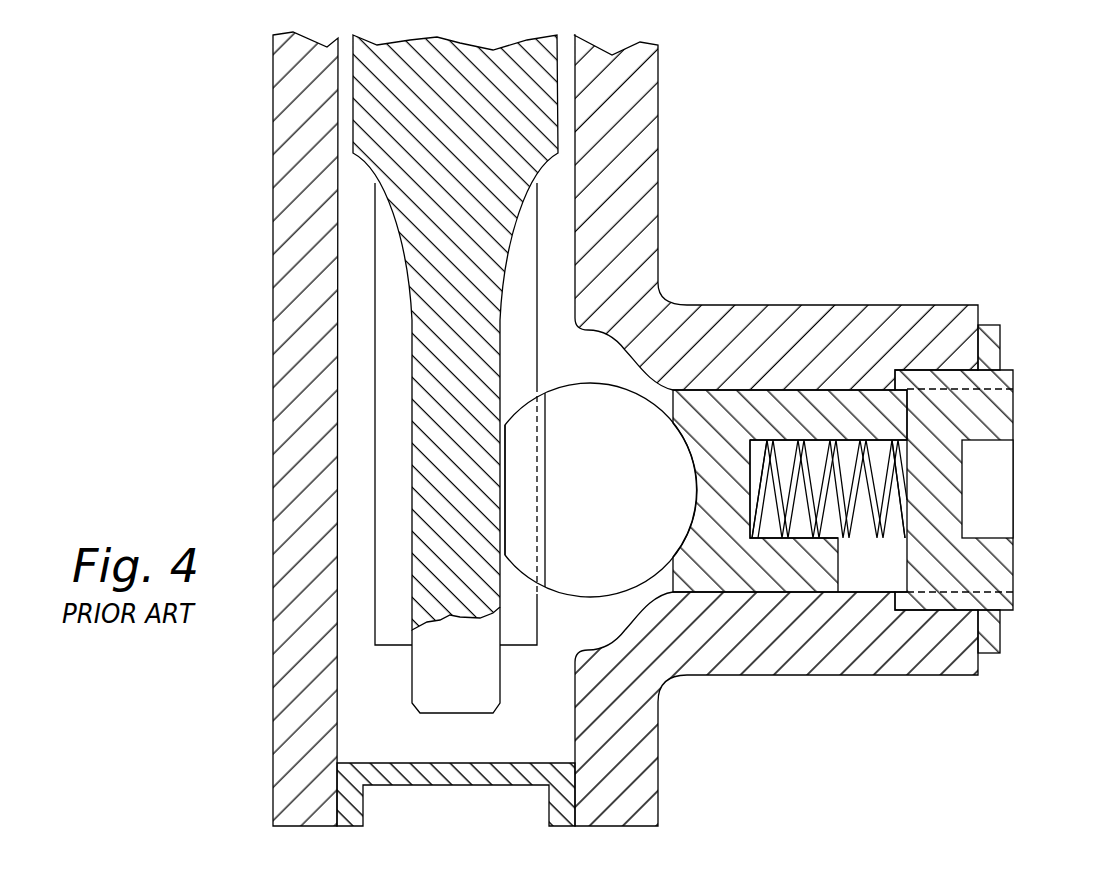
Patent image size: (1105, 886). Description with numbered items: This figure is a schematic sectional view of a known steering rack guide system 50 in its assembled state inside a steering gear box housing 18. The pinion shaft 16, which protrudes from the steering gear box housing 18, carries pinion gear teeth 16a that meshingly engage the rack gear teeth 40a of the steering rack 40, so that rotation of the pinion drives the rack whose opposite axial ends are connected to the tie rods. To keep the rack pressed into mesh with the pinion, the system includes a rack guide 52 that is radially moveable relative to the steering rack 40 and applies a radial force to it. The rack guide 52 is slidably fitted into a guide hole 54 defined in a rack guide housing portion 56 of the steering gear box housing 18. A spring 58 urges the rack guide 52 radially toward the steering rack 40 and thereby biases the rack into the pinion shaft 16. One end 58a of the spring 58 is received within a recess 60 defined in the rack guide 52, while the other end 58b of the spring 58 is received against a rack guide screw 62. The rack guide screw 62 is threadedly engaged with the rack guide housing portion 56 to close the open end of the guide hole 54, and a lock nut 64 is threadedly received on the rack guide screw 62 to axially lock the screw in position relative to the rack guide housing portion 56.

The pinion shaft 16 is at (483, 107).
The pinion gear teeth 16a is at (520, 600).
The steering gear box housing 18 is at (655, 703).
The steering rack 40 is at (590, 416).
The rack gear teeth 40a is at (525, 492).
The steering rack guide system 50 is at (870, 516).
The rack guide 52 is at (743, 562).
The guide hole 54 is at (872, 375).
The rack guide housing portion 56 is at (955, 677).
The spring 58 is at (855, 425).
The one end of the spring 58a is at (750, 522).
The other end of the spring 58b is at (903, 523).
The recess 60 is at (787, 440).
The rack guide screw 62 is at (957, 487).
The lock nut 64 is at (1000, 345).